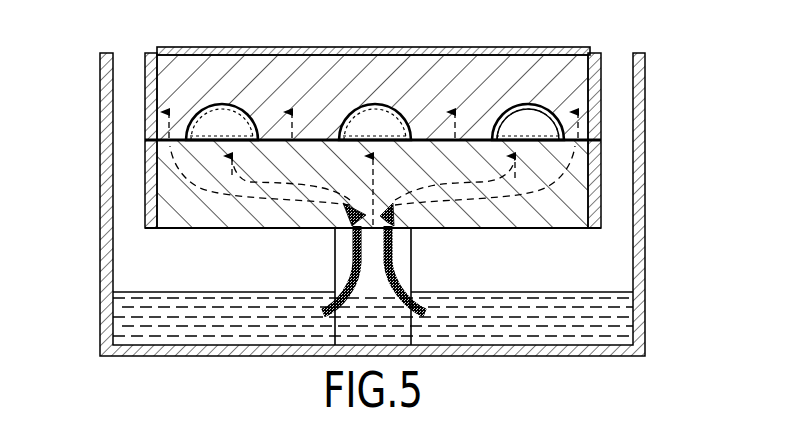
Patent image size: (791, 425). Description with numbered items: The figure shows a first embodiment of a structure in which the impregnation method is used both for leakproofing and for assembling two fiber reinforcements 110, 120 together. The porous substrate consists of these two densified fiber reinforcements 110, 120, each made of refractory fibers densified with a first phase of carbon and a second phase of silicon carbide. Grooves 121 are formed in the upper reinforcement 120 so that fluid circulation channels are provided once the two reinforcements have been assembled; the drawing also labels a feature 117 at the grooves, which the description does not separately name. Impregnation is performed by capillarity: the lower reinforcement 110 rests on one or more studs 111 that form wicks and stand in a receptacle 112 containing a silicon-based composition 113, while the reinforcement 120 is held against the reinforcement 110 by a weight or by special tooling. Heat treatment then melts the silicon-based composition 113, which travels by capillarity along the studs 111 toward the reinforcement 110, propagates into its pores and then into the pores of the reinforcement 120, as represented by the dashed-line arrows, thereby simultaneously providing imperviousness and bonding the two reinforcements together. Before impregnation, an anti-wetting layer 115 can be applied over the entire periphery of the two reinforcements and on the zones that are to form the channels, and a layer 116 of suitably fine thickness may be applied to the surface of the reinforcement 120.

The fiber reinforcement 110 is at (188, 210).
The stud 111 is at (335, 246).
The receptacle 112 is at (645, 262).
The silicon-based composition 113 is at (548, 300).
The anti-wetting layer 115 is at (149, 97).
The layer 116 is at (588, 48).
The dome coating layer 117 is at (527, 118).
The fiber reinforcement 120 is at (226, 64).
The grooves 121 is at (373, 125).